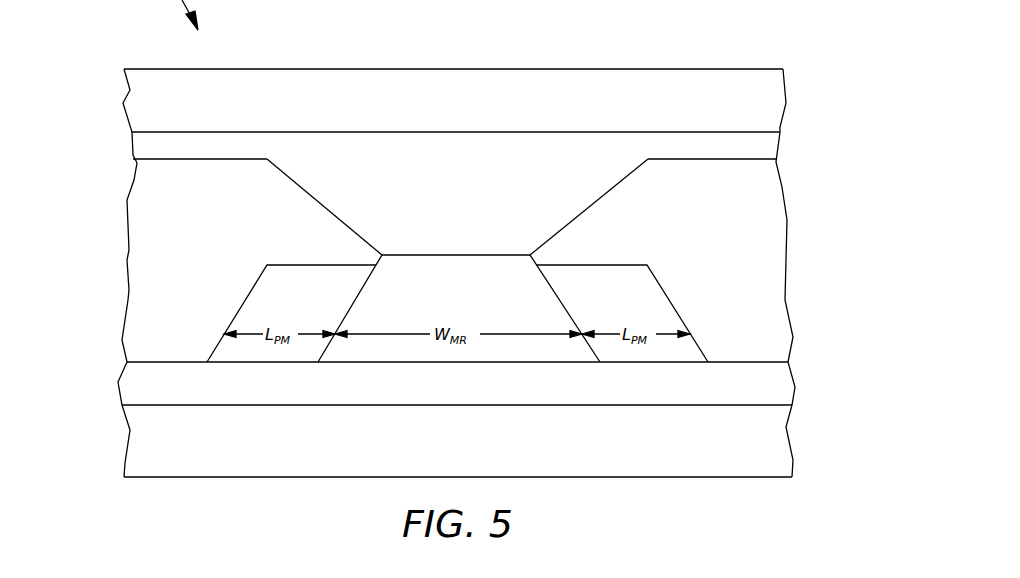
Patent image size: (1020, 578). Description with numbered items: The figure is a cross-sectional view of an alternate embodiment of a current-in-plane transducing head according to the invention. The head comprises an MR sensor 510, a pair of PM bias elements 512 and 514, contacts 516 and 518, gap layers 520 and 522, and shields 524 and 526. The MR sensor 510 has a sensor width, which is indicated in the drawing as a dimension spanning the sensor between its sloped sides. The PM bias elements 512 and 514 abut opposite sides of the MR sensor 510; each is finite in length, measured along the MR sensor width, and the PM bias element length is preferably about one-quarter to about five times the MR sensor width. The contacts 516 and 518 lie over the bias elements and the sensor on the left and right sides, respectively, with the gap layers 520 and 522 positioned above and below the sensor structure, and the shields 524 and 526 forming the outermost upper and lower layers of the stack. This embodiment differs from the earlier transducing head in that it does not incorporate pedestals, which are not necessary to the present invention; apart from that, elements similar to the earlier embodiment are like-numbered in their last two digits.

The MR sensor 510 is at (493, 270).
The PM bias element 512 is at (265, 315).
The PM bias element 514 is at (650, 313).
The contact 516 is at (175, 206).
The contact 518 is at (748, 213).
The gap layer 520 is at (750, 150).
The gap layer 522 is at (755, 378).
The shield 524 is at (755, 103).
The shield 526 is at (757, 447).